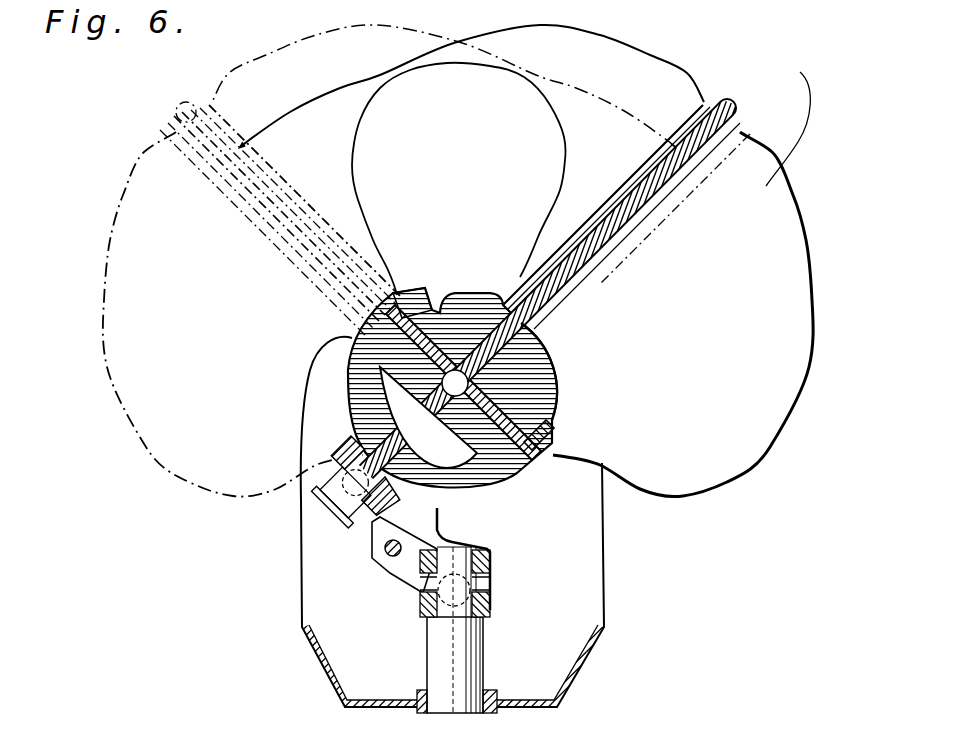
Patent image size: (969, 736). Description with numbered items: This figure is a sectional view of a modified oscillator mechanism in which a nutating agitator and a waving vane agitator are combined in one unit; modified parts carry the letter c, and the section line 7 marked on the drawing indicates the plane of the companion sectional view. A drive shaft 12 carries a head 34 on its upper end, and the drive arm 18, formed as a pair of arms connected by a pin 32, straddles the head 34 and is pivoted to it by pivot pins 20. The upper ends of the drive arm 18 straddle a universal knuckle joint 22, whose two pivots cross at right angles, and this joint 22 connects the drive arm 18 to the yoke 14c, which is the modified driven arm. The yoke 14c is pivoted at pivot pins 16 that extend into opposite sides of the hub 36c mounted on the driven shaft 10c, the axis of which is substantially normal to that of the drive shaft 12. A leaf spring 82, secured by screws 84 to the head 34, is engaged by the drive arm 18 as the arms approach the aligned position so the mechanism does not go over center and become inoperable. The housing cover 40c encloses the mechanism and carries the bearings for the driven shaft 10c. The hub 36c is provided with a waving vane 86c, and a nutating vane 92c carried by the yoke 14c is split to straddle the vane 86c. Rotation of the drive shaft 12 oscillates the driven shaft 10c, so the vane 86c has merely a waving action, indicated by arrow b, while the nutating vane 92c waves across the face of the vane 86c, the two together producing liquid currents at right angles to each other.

The nutating vane 92c is at (744, 77).
The arrow b is at (546, 78).
The yoke 14c is at (466, 489).
The waving vane 86c is at (615, 235).
The section line 7- 7 is at (458, 456).
The driven shaft 10c is at (456, 371).
The hub 36c is at (556, 372).
The pivot pins 16 is at (403, 297).
The universal knuckle joint 22 is at (336, 458).
The drive arm 18 is at (417, 596).
The pin 32 is at (388, 553).
The housing cover 40c is at (590, 663).
The drive shaft 12 is at (482, 648).
The pivot pins 20 is at (455, 630).
The screws 84 is at (493, 598).
The head 34 is at (420, 612).
The leaf spring 82 is at (471, 543).